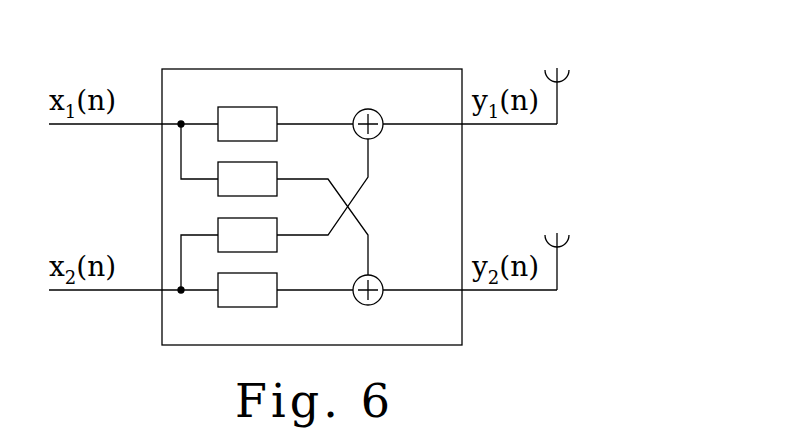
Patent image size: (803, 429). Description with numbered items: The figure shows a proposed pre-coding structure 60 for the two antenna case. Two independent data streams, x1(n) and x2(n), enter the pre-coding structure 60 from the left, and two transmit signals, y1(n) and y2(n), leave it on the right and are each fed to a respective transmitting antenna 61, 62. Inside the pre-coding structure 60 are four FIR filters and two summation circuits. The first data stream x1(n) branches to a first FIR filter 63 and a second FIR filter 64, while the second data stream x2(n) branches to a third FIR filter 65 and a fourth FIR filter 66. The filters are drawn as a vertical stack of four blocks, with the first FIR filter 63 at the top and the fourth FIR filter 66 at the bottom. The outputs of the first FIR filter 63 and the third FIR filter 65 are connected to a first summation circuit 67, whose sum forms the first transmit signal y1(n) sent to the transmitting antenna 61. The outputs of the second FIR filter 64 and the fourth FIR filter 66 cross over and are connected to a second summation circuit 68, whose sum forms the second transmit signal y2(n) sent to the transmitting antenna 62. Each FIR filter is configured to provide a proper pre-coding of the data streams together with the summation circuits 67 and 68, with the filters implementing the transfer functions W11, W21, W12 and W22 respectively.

The pre-coding structure 60 is at (197, 82).
The transmitting antenna 61 is at (558, 93).
The transmitting antenna 62 is at (558, 252).
The first FIR filter 63 is at (263, 108).
The second FIR filter 64 is at (223, 191).
The third FIR filter 65 is at (221, 229).
The fourth FIR filter 66 is at (230, 299).
The first summation circuit 67 is at (378, 114).
The second summation circuit 68 is at (376, 301).